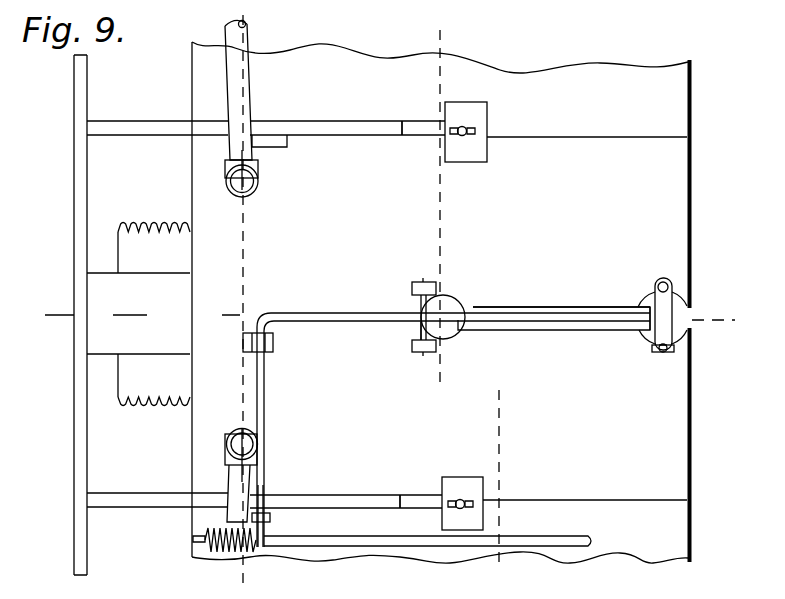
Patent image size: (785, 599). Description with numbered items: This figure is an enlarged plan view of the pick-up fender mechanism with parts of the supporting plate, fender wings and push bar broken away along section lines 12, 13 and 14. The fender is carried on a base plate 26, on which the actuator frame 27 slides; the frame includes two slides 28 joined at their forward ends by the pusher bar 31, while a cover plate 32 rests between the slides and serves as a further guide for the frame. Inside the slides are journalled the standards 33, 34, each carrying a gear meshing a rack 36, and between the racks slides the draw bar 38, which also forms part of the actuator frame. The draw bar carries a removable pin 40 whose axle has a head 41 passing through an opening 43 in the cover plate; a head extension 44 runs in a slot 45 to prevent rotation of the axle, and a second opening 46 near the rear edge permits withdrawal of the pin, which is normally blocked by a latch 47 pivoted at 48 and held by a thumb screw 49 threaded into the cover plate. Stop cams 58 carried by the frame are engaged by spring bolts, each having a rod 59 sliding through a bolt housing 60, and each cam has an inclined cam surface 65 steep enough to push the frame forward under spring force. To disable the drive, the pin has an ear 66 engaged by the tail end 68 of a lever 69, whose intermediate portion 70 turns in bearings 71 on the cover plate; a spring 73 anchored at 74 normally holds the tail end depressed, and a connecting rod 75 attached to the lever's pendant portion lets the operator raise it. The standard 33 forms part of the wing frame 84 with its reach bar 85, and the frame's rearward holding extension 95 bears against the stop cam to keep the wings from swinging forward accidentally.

The section line 12 is at (393, 321).
The section line 13 is at (243, 14).
The section line 14 is at (432, 33).
The base plate 26 is at (680, 548).
The actuator frame 27 is at (157, 112).
The slides 28 is at (121, 137).
The pusher bar 31 is at (74, 531).
The cover plate 32 is at (670, 455).
The standard 33 is at (258, 186).
The standard 34 is at (238, 438).
The rack 36 is at (142, 222).
The draw bar 38 is at (92, 288).
The pin 40 is at (455, 343).
The head 41 is at (443, 295).
The opening 43 is at (454, 297).
The head extension 44 is at (476, 307).
The slot 45 is at (551, 307).
The opening 46 is at (642, 307).
The latch 47 is at (670, 328).
The pivot 48 is at (668, 286).
The thumb screw 49 is at (655, 349).
The stop cam 58 is at (352, 121).
The rod 59 is at (475, 128).
The bolt housing 60 is at (461, 104).
The cam surface 65 is at (412, 138).
The ear 66 is at (418, 331).
The tail end 68 is at (365, 313).
The lever 69 is at (270, 411).
The intermediate portion 70 is at (264, 476).
The bearings 71 is at (243, 344).
The spring 73 is at (224, 554).
The anchor 74 is at (196, 539).
The connecting rod 75 is at (579, 532).
The wing frame 84 is at (258, 94).
The reach bar 85 is at (233, 28).
The holding extension 95 is at (287, 144).